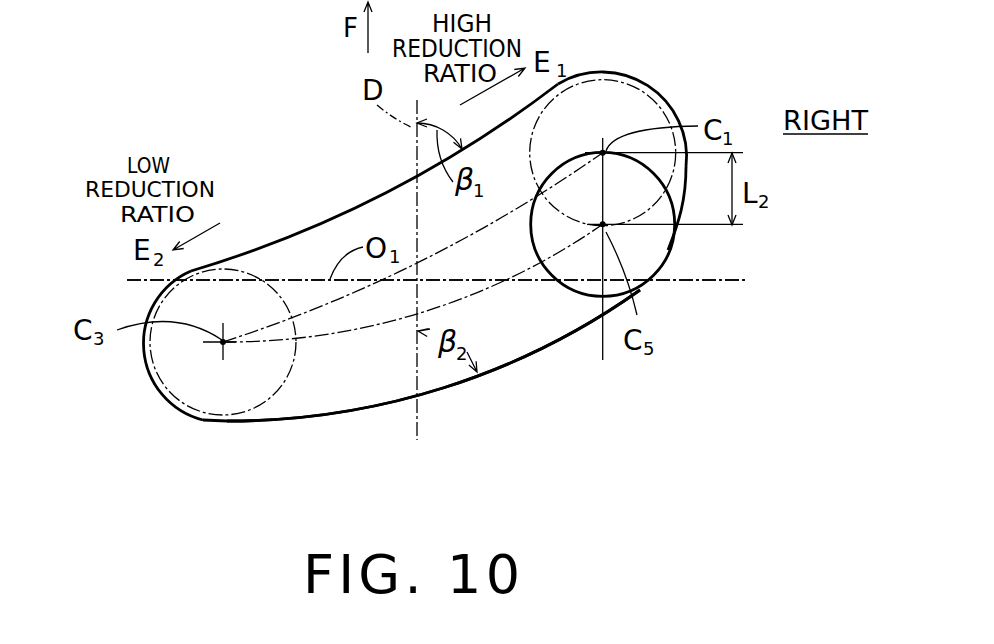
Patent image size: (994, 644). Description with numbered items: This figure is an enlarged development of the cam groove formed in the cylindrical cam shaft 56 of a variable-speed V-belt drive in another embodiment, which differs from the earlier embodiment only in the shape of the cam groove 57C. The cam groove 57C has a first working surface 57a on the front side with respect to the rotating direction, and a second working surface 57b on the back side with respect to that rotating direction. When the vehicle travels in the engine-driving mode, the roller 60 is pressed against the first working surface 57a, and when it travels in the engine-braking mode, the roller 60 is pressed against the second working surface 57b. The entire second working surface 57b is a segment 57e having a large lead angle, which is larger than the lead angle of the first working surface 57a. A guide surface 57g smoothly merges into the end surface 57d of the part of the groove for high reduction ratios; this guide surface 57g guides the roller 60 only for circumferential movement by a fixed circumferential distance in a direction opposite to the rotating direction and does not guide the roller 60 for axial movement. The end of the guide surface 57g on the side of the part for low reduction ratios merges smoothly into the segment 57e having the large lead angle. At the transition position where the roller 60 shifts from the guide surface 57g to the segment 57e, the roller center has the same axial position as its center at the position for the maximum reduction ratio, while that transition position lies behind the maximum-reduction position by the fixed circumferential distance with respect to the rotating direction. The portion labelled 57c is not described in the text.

The cylindrical cam shaft 56 is at (322, 195).
The first working surface 57a is at (373, 193).
The second working surface 57b is at (433, 382).
The left end arc portion of groove 57c is at (158, 390).
The cam groove 57C is at (311, 242).
The end surface 57d is at (653, 92).
The segment having the large lead angle 57e is at (453, 390).
The guide surface 57g is at (687, 198).
The roller 60 is at (605, 78).